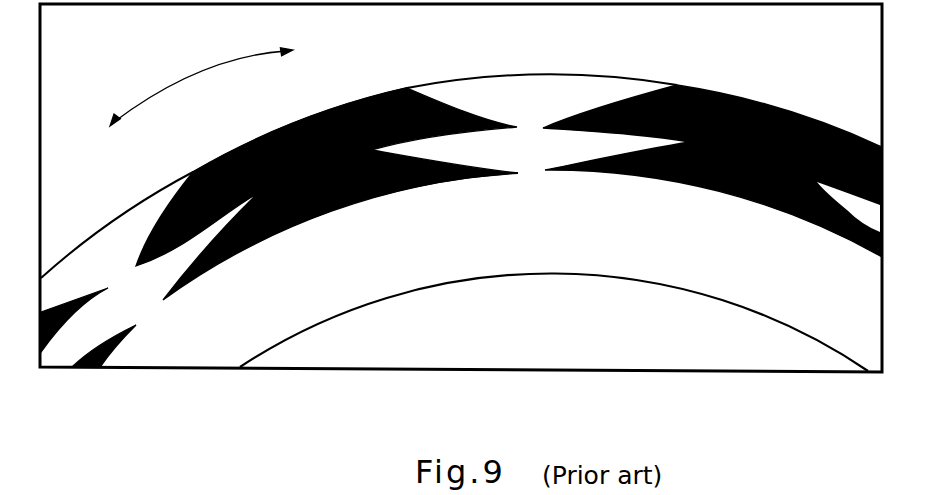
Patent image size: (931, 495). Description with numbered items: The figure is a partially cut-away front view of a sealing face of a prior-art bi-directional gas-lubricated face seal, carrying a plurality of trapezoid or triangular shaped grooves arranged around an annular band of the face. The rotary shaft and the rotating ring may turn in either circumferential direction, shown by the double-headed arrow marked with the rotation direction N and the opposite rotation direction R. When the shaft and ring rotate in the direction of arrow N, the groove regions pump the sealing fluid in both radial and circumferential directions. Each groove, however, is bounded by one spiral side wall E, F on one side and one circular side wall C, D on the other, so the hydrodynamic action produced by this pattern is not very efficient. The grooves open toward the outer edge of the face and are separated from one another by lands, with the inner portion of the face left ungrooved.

The rotation direction arrow R is at (212, 78).
The rotation direction arrow N is at (101, 133).
The spiral side wall E is at (422, 98).
The spiral side wall F is at (457, 112).
The circular side wall D is at (462, 177).
The circular side wall C is at (502, 132).